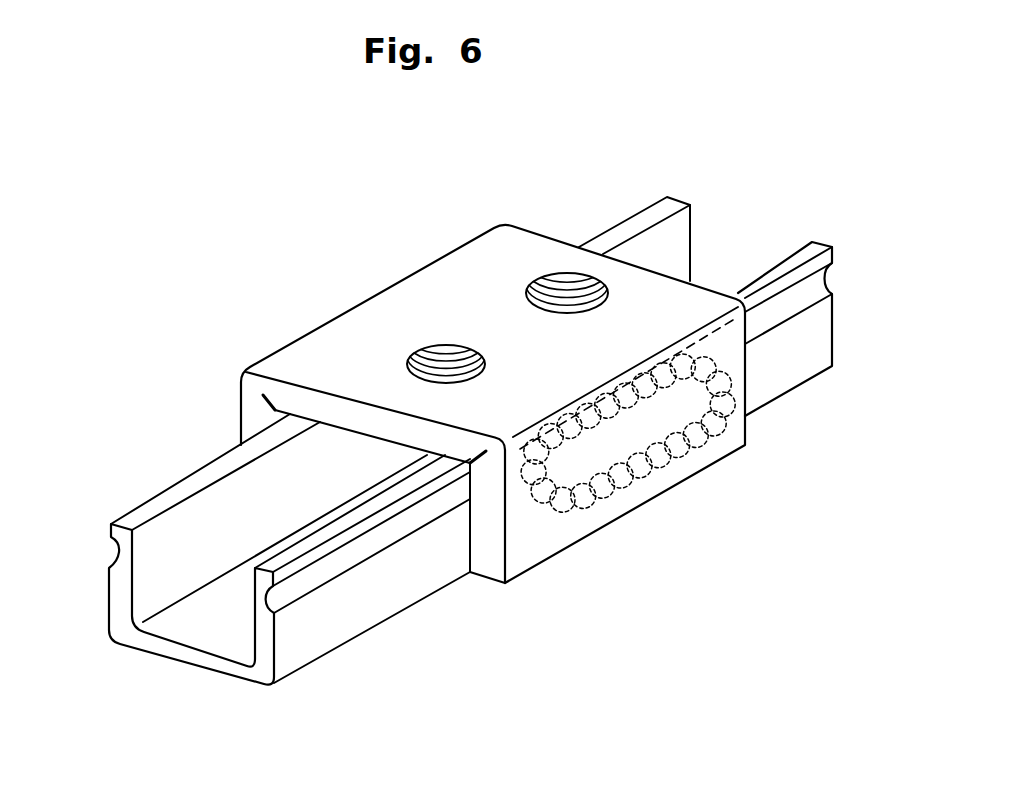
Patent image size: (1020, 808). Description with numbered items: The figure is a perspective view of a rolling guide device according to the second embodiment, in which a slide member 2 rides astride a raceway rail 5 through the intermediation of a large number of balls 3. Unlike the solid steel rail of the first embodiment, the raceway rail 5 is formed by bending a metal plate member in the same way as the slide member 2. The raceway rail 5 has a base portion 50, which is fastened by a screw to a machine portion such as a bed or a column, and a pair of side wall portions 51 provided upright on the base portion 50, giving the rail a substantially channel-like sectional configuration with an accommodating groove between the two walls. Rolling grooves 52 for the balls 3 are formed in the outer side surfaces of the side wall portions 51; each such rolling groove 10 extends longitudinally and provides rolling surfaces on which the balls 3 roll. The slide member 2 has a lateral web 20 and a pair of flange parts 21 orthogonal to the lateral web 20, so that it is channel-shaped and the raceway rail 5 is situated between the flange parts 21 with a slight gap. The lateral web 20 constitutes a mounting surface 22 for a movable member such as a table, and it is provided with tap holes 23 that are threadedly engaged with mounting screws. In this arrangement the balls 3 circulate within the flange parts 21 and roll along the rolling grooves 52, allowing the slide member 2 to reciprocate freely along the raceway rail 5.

The slide member 2 is at (493, 388).
The balls 3 is at (628, 476).
The raceway rail 5 is at (470, 463).
The rolling groove 10 is at (446, 463).
The lateral web 20 is at (493, 370).
The flange parts 21 is at (487, 566).
The mounting surface 22 is at (448, 272).
The tap holes 23 is at (431, 356).
The base portion 50 is at (190, 657).
The side wall portions 51 is at (178, 494).
The rolling grooves 52 is at (348, 563).